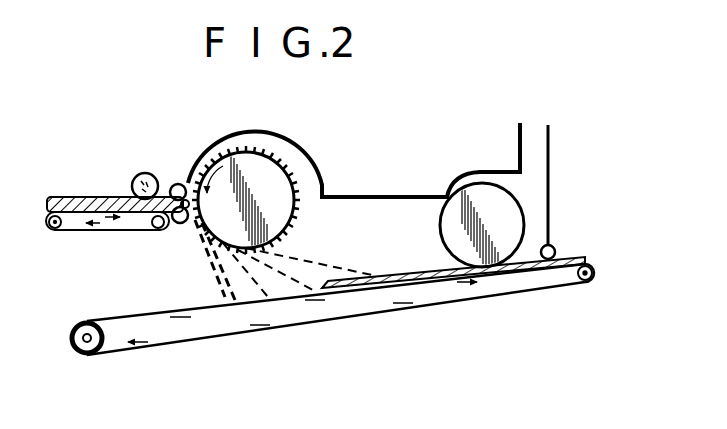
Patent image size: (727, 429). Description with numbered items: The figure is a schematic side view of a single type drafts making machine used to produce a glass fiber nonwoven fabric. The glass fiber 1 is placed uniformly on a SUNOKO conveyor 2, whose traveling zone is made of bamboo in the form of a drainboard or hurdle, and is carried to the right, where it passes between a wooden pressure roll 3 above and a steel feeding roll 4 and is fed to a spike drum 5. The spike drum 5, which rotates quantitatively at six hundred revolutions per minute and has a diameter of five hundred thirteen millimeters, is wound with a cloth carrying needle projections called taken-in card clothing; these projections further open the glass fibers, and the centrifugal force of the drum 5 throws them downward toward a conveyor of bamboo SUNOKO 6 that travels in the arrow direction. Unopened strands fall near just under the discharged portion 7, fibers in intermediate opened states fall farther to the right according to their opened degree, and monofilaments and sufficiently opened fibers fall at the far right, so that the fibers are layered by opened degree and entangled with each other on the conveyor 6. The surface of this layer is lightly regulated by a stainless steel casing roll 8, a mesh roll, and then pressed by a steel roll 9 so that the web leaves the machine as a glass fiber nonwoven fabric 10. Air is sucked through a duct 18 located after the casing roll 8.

The glass fiber 1 is at (72, 192).
The SUNOKO conveyor 2 is at (87, 233).
The wooden pressure roll 3 is at (144, 177).
The steel feeding roll 4 is at (177, 184).
The spike drum 5 is at (270, 190).
The conveyor of bamboo SUNOKO 6 is at (175, 346).
The discharged portion 7 is at (183, 232).
The stainless steel casing roll 8 is at (453, 187).
The steel roll 9 is at (558, 233).
The glass fiber nonwoven fabric 10 is at (586, 262).
The duct 18 is at (546, 114).